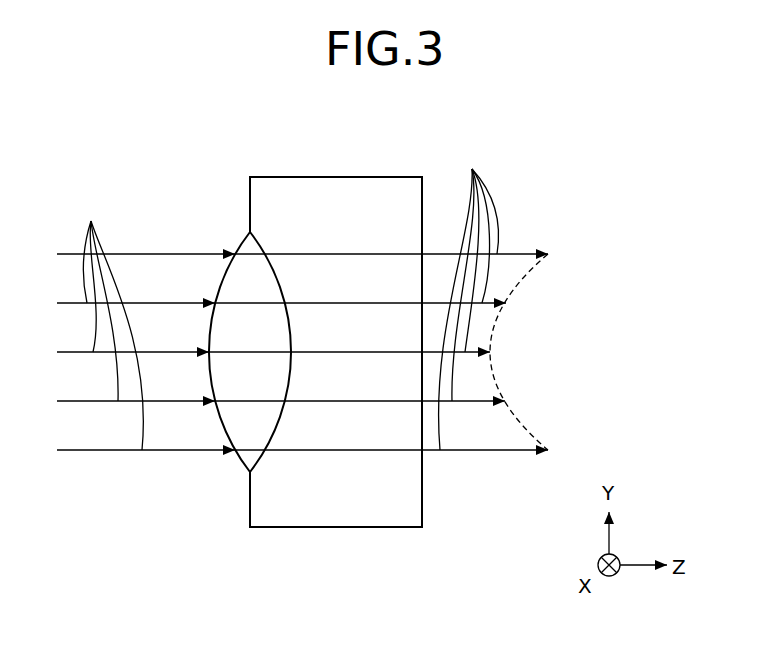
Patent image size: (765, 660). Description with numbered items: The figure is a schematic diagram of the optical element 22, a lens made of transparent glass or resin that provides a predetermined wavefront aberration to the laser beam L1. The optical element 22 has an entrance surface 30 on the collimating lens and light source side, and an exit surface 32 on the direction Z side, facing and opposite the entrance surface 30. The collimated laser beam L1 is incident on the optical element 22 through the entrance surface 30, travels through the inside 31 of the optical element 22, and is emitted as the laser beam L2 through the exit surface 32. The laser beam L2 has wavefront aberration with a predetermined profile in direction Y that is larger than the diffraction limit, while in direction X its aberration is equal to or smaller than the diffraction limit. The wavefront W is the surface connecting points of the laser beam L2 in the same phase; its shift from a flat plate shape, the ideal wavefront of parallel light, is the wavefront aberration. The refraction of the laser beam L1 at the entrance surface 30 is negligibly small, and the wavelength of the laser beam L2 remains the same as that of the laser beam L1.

The optical element 22 is at (352, 158).
The entrance surface 30 is at (210, 325).
The inside 31 is at (334, 512).
The exit surface 32 is at (422, 507).
The laser beam L1 is at (110, 322).
The laser beam L2 is at (469, 298).
The wavefront W is at (517, 415).